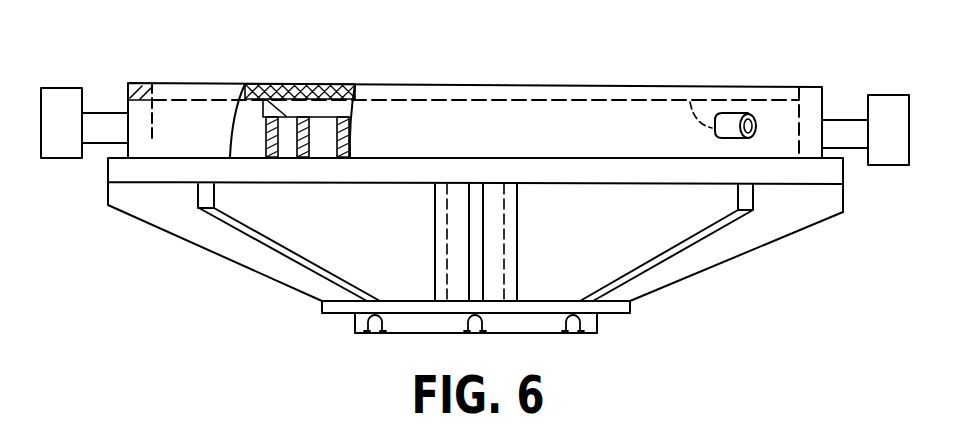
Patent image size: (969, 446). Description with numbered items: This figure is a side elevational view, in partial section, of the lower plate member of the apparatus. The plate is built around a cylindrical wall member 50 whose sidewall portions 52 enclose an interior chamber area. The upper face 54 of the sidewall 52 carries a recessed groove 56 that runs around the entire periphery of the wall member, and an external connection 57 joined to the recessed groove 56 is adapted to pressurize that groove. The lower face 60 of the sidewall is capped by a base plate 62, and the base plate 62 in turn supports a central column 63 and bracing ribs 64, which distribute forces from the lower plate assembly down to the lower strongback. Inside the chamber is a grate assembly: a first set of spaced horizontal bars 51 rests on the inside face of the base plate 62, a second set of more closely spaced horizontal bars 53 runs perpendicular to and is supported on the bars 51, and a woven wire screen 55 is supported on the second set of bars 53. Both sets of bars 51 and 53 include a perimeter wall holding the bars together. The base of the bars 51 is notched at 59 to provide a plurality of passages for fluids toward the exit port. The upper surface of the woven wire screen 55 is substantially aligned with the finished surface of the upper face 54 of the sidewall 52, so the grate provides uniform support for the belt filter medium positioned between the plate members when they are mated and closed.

The cylindrical wall member 50 is at (561, 146).
The first set of horizontal bars 51 is at (300, 140).
The sidewall portions 52 is at (128, 93).
The second set of horizontal bars 53 is at (318, 110).
The upper face 54 is at (147, 83).
The woven wire screen 55 is at (293, 92).
The recessed groove 56 is at (152, 82).
The external connection 57 is at (733, 118).
The notches 59 is at (342, 145).
The lower face 60 is at (143, 156).
The base plate 62 is at (125, 173).
The central column 63 is at (510, 253).
The bracing ribs 64 is at (298, 262).